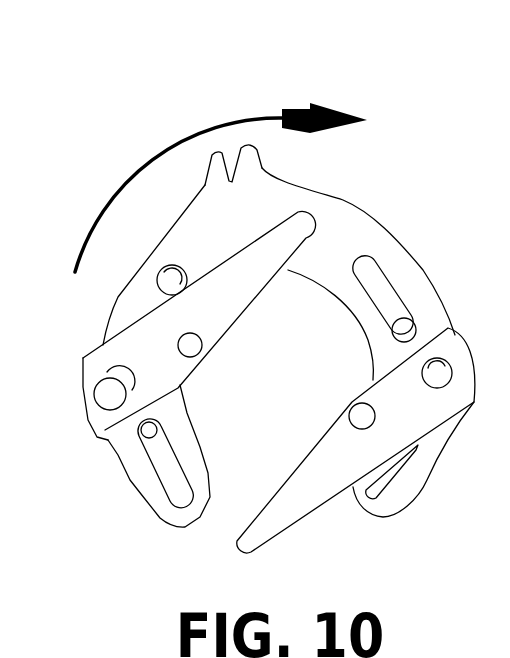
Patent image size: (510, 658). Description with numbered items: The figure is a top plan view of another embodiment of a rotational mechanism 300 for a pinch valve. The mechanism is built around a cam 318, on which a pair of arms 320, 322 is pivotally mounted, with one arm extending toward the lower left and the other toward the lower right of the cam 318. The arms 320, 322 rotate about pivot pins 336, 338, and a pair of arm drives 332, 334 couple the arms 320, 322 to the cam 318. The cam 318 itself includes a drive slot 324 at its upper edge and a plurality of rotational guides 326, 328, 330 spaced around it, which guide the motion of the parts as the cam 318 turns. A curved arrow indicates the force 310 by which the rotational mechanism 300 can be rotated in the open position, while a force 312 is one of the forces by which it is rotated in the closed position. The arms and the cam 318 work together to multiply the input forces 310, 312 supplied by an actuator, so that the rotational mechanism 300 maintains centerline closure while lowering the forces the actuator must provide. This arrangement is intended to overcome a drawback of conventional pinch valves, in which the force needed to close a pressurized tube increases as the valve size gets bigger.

The rotational mechanism 300 is at (123, 108).
The force 310 is at (205, 128).
The force 312 is at (460, 648).
The cam 318 is at (348, 238).
The arm 320 is at (237, 304).
The arm 322 is at (290, 482).
The drive slot 324 is at (237, 178).
The rotational guide 326 is at (170, 283).
The rotational guide 328 is at (153, 427).
The rotational guide 330 is at (410, 317).
The arm drive 332 is at (110, 397).
The arm drive 334 is at (460, 377).
The pivot pin 336 is at (182, 352).
The pivot pin 338 is at (352, 430).